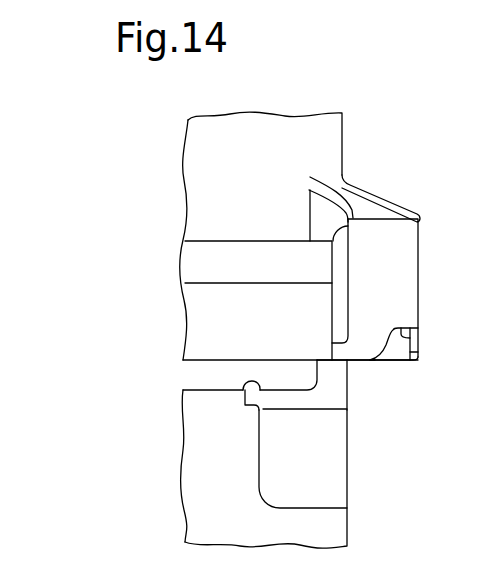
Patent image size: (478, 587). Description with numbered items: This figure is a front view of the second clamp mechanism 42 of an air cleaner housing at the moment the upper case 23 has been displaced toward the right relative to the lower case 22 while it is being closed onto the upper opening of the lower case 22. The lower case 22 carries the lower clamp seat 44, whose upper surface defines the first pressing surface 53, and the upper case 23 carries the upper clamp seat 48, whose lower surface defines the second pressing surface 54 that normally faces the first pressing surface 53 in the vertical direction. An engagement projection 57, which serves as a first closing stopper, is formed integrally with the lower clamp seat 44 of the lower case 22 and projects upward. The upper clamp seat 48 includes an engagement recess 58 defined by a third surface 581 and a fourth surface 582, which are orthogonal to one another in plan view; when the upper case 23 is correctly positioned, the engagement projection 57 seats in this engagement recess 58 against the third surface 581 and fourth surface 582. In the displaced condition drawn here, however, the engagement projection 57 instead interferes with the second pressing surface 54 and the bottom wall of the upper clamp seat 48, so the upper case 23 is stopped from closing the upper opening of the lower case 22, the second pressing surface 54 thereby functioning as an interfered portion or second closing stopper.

The lower case 22 is at (191, 472).
The upper case 23 is at (186, 143).
The second clamp mechanism 42 is at (422, 276).
The lower clamp seat 44 is at (307, 502).
The upper clamp seat 48 is at (413, 236).
The first pressing surface 53 is at (242, 392).
The second pressing surface 54 is at (362, 362).
The engagement projection 57 is at (314, 373).
The engagement recess 58 is at (412, 338).
The third surface 581 is at (397, 350).
The fourth surface 582 is at (419, 352).